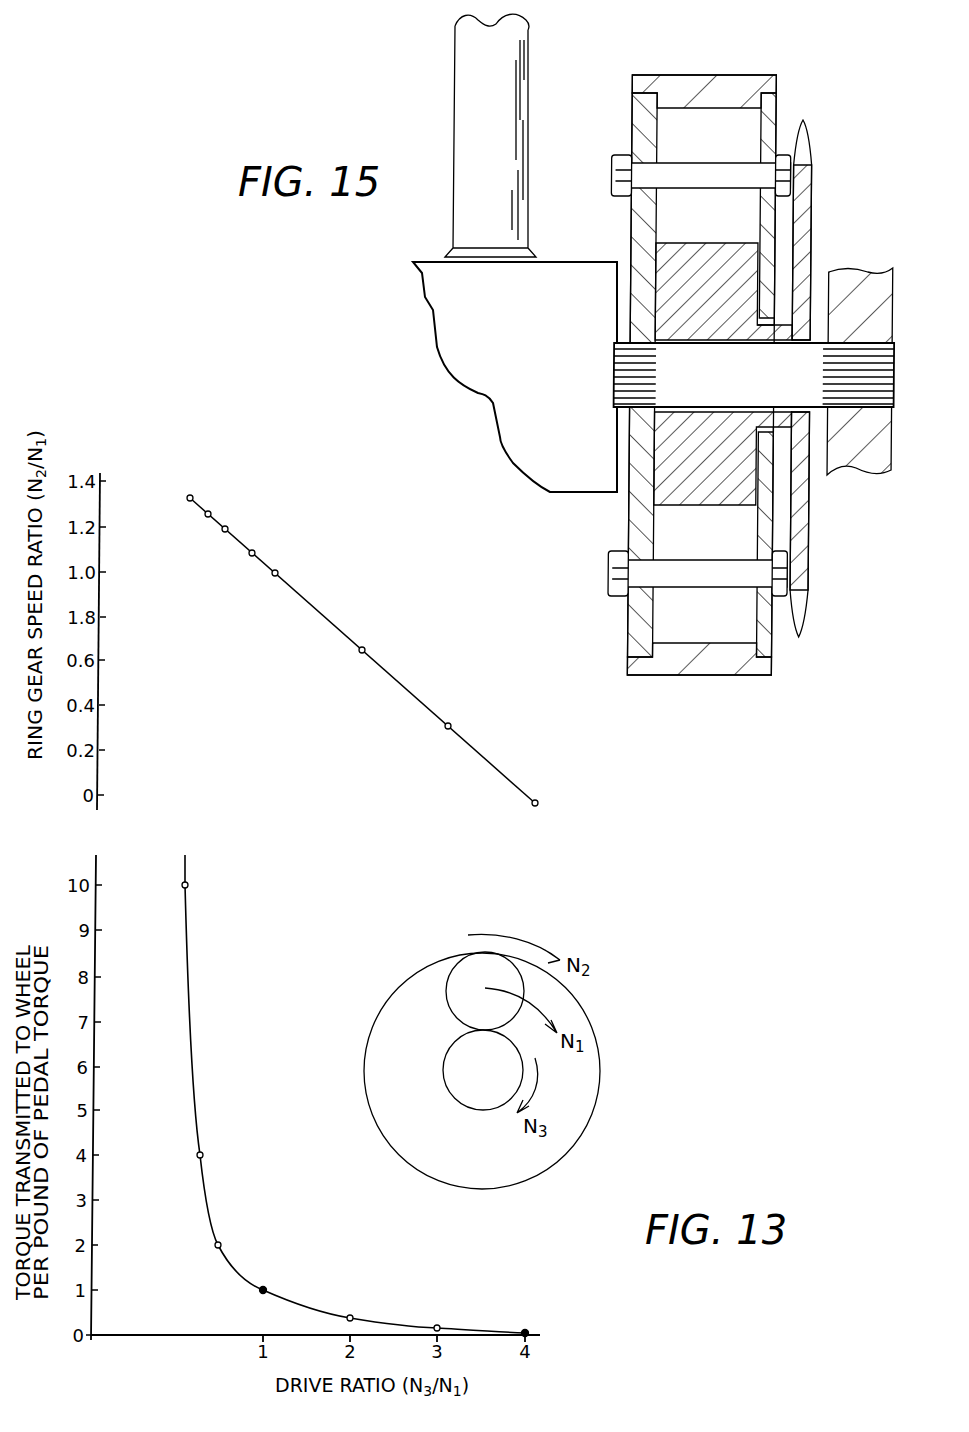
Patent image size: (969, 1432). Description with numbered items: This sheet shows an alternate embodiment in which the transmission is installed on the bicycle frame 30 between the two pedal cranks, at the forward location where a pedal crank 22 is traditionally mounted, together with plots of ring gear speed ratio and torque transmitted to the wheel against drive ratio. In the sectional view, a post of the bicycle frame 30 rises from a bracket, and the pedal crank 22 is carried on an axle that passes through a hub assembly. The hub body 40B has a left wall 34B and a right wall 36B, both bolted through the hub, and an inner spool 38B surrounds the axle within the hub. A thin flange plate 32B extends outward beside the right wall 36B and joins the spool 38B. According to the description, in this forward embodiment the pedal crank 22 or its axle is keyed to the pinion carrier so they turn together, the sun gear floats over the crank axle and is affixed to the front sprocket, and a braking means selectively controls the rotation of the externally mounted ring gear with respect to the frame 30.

The bicycle frame 30 is at (482, 63).
The hub body 40B is at (737, 81).
The right wall of hub 36B is at (738, 139).
The left wall of hub 34B is at (642, 136).
The flange plate 32B is at (815, 200).
The pedal crank 22 is at (876, 292).
The spool 38B is at (733, 505).